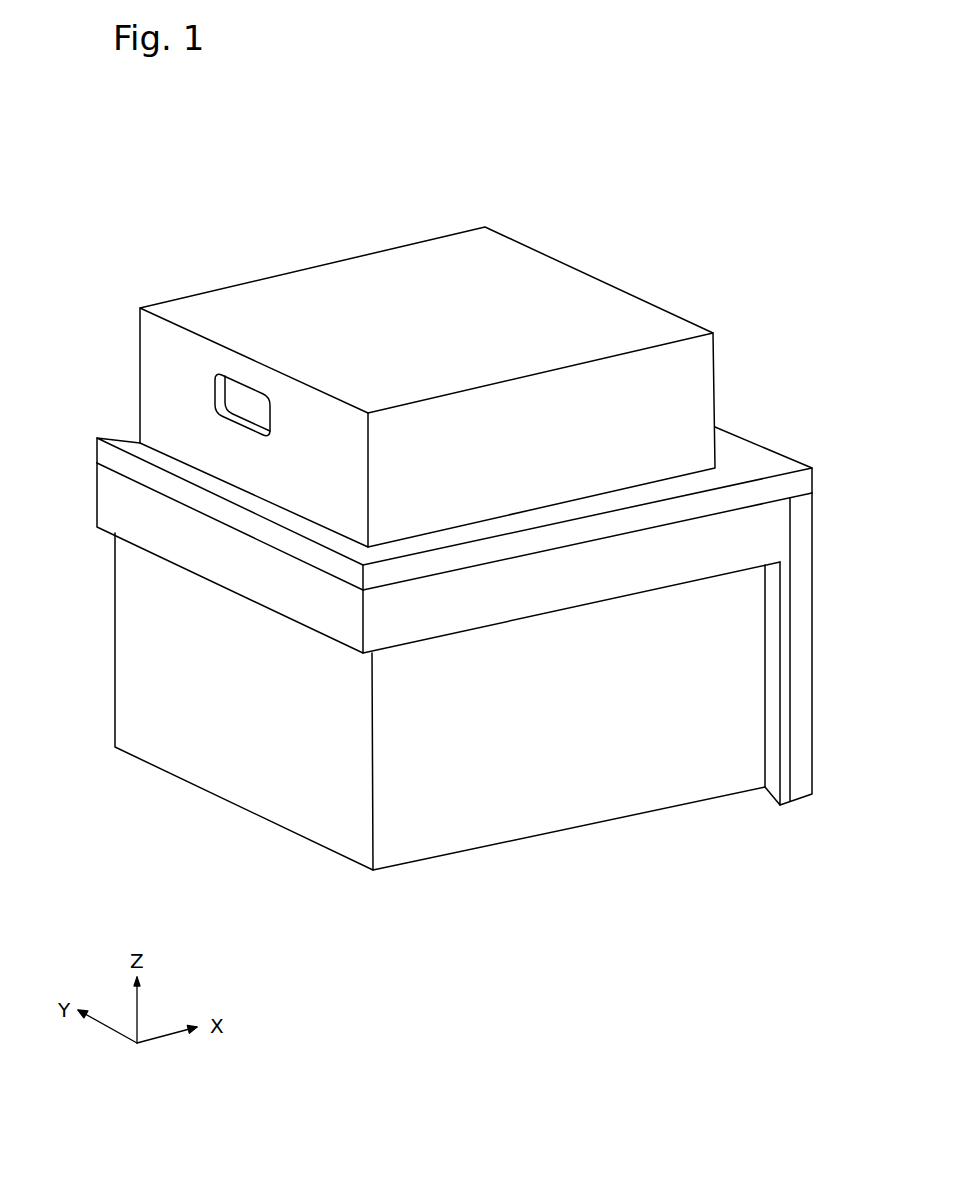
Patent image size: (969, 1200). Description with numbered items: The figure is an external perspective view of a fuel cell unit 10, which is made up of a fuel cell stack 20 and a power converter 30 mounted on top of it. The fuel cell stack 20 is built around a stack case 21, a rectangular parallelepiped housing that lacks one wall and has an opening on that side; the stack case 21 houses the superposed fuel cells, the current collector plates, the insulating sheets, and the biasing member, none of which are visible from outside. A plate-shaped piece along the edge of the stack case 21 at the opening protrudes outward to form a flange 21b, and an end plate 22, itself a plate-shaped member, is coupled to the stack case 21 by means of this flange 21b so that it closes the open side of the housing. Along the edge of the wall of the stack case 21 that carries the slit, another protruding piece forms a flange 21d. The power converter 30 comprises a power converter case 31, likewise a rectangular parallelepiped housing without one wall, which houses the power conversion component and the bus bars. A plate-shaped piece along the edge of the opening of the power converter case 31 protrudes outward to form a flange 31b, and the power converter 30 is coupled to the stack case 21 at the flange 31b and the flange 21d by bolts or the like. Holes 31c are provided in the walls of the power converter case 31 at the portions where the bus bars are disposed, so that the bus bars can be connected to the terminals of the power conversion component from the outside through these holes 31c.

The fuel cell unit 10 is at (173, 225).
The power converter 30 is at (287, 235).
The power converter case 31 is at (550, 280).
The holes 31c is at (240, 407).
The flange 31b is at (748, 460).
The fuel cell stack 20 is at (200, 852).
The stack case 21 is at (562, 813).
The flange 21d is at (112, 508).
The flange 21b is at (770, 792).
The end plate 22 is at (805, 527).